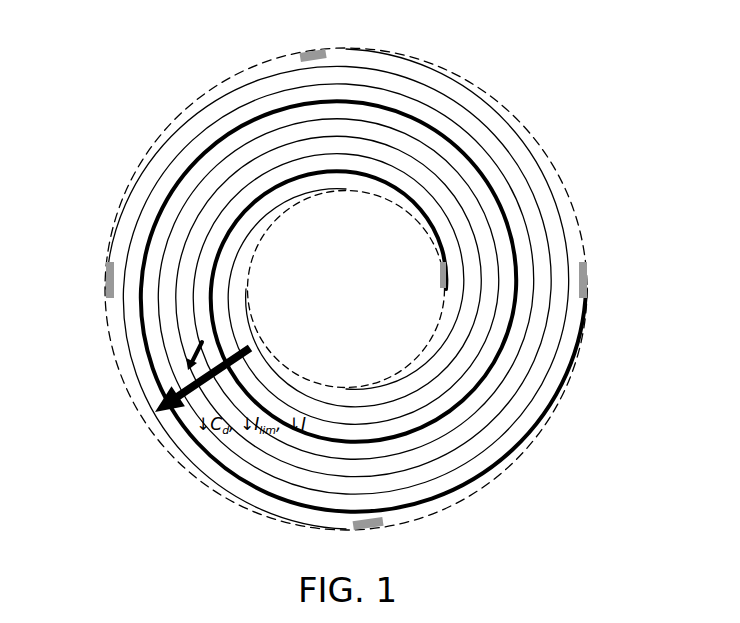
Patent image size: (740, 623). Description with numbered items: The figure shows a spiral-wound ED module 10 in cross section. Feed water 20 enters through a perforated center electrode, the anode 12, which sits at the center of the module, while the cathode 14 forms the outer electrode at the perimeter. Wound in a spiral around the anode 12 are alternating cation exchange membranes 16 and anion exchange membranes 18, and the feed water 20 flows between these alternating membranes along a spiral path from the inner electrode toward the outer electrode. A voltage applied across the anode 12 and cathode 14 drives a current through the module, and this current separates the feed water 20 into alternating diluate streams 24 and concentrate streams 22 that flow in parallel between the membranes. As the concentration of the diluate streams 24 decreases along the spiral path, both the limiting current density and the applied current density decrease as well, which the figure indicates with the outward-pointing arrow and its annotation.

The spiral-wound ED module 10 is at (92, 150).
The anode 12 is at (305, 379).
The cathode 14 is at (157, 142).
The cation exchange membranes 16 is at (486, 429).
The anion exchange membranes 18 is at (458, 472).
The feed water 20 is at (360, 302).
The concentrate stream 22 is at (325, 57).
The diluate stream 24 is at (106, 277).